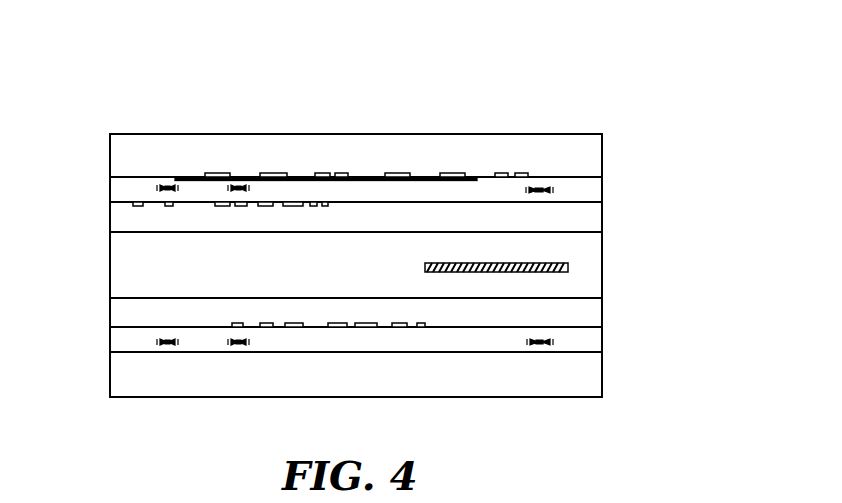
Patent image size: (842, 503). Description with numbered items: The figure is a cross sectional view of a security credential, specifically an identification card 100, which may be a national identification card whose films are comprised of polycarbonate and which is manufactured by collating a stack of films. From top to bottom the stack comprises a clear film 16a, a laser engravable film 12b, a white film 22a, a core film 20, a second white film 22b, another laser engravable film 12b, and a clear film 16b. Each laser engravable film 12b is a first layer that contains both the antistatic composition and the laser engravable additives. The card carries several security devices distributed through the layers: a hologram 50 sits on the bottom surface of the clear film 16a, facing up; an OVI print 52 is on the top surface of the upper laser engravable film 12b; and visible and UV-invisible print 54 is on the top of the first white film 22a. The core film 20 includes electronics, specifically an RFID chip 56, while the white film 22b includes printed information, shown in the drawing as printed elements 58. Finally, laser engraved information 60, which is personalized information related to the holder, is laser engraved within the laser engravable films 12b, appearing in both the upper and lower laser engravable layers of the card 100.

The identification card 100 is at (131, 82).
The clear film 16a is at (602, 157).
The clear film 16b is at (602, 380).
The laser engravable film 12b is at (602, 192).
The white film 22a is at (602, 220).
The white film 22b is at (602, 312).
The core film 20 is at (602, 282).
The hologram 50 is at (501, 173).
The OVI print 52 is at (366, 178).
The visible and UV-invisible print 54 is at (168, 206).
The RFID chip 56 is at (555, 263).
The conductive pads on second substrate 58 is at (264, 323).
The laser engraved information 60 is at (166, 184).